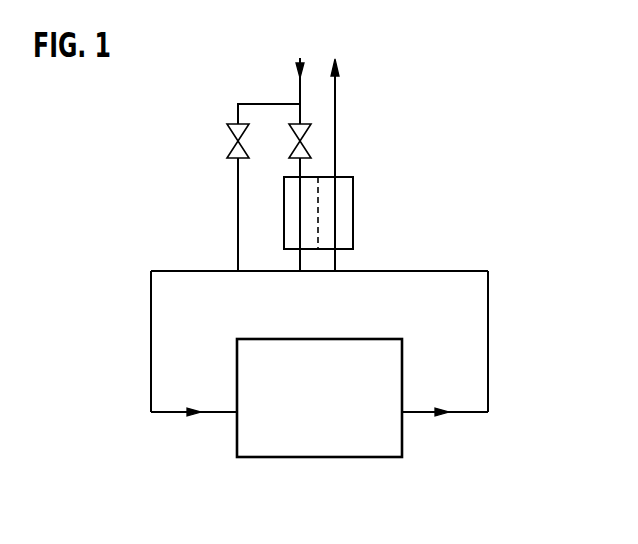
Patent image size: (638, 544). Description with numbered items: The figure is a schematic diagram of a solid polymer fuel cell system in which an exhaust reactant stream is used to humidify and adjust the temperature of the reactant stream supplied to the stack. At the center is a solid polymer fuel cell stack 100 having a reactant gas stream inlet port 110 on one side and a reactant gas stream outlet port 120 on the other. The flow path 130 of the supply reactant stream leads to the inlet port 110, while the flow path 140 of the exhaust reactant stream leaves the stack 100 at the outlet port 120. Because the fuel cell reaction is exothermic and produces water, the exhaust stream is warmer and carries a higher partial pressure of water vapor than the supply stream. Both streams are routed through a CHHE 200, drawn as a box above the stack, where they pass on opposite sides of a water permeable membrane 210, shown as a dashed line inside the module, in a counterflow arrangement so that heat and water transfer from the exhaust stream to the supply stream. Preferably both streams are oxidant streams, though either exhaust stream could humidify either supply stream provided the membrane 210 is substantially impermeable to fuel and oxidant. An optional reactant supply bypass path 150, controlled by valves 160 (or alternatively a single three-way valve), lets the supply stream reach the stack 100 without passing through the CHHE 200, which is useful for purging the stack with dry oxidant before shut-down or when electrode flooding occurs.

The solid polymer fuel cell stack 100 is at (380, 440).
The reactant gas stream inlet port 110 is at (220, 413).
The reactant gas stream outlet port 120 is at (418, 413).
The flow path of supply reactant stream 130 is at (150, 340).
The flow path of exhaust reactant stream 140 is at (488, 312).
The reactant supply bypass path 150 is at (237, 203).
The valves 160 is at (291, 127).
The CHHE 200 is at (353, 184).
The water permeable membrane 210 is at (319, 215).